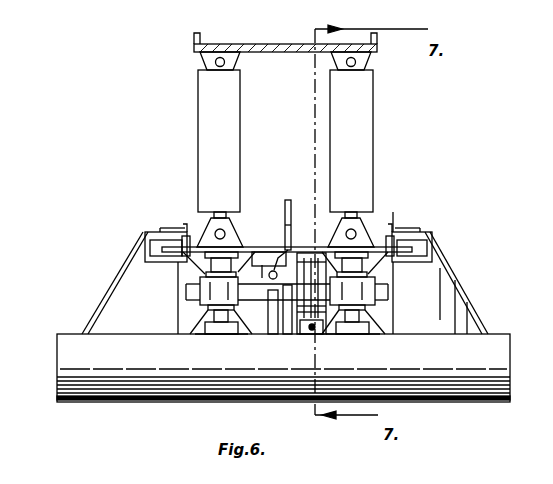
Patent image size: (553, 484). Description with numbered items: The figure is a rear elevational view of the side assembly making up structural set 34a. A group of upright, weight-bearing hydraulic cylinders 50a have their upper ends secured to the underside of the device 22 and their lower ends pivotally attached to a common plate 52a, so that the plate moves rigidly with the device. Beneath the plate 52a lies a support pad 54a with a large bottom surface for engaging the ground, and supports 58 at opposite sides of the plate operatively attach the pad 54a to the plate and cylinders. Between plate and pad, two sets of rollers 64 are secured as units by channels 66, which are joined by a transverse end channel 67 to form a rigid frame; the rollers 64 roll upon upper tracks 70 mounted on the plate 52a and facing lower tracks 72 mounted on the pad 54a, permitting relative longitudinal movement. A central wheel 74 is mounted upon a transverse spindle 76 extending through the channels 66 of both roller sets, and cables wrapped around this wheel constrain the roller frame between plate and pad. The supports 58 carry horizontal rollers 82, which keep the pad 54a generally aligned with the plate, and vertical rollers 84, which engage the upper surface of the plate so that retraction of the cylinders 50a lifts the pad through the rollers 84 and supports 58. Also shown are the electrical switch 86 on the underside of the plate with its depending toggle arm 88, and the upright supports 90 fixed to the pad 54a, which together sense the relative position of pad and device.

The device 22 is at (190, 46).
The hydraulic cylinders 50a is at (205, 100).
The plate 52a is at (205, 232).
The structural set 34a is at (405, 152).
The support pad 54a is at (175, 392).
The supports 58 is at (120, 296).
The rollers 64 is at (208, 312).
The channels 66 is at (202, 286).
The transverse end channel 67 is at (276, 270).
The upper tracks 70 is at (208, 264).
The lower tracks 72 is at (228, 334).
The central wheel 74 is at (306, 334).
The transverse spindle 76 is at (266, 300).
The horizontal rollers 82 is at (148, 250).
The vertical rollers 84 is at (186, 224).
The electrical switch 86 is at (262, 248).
The toggle arm 88 is at (282, 250).
The upright supports 90 is at (283, 320).